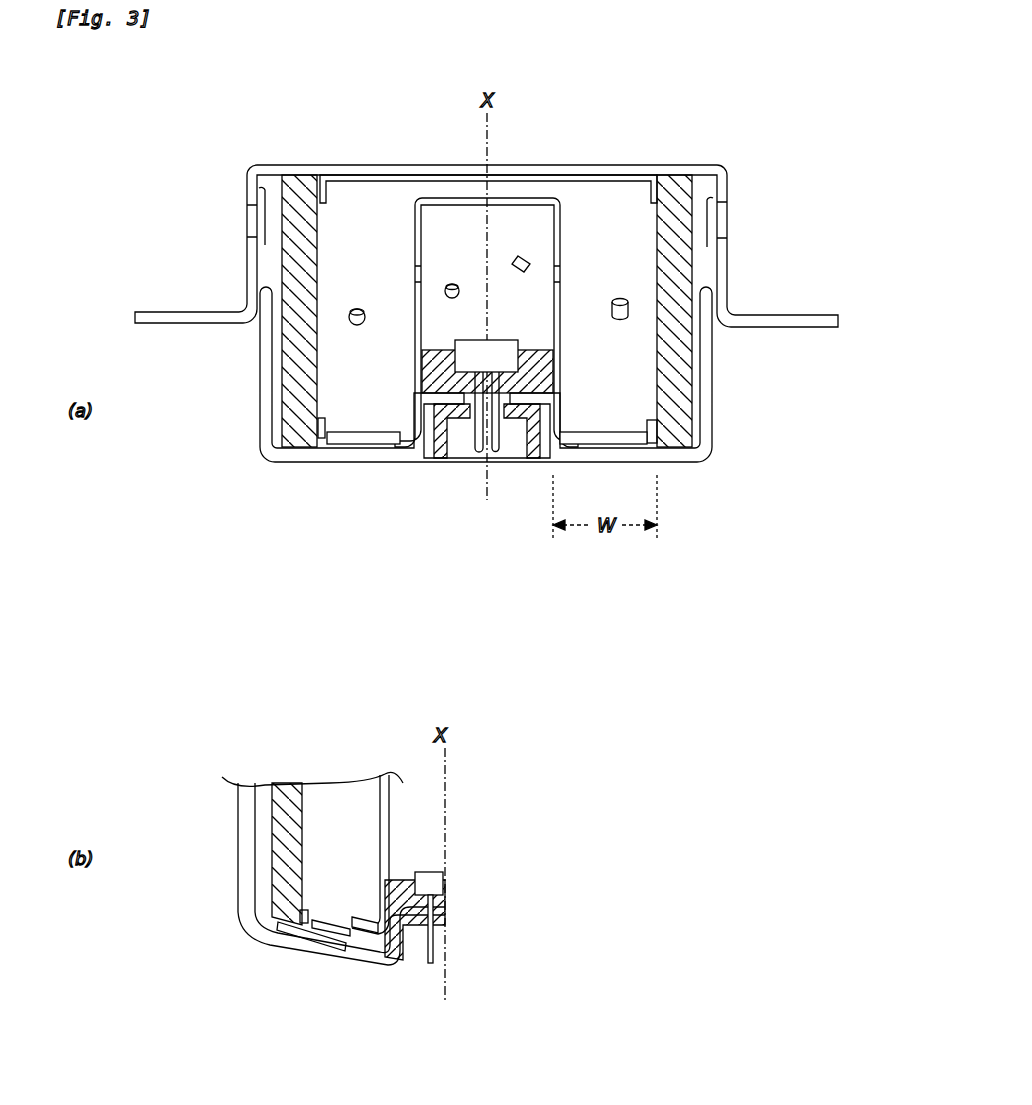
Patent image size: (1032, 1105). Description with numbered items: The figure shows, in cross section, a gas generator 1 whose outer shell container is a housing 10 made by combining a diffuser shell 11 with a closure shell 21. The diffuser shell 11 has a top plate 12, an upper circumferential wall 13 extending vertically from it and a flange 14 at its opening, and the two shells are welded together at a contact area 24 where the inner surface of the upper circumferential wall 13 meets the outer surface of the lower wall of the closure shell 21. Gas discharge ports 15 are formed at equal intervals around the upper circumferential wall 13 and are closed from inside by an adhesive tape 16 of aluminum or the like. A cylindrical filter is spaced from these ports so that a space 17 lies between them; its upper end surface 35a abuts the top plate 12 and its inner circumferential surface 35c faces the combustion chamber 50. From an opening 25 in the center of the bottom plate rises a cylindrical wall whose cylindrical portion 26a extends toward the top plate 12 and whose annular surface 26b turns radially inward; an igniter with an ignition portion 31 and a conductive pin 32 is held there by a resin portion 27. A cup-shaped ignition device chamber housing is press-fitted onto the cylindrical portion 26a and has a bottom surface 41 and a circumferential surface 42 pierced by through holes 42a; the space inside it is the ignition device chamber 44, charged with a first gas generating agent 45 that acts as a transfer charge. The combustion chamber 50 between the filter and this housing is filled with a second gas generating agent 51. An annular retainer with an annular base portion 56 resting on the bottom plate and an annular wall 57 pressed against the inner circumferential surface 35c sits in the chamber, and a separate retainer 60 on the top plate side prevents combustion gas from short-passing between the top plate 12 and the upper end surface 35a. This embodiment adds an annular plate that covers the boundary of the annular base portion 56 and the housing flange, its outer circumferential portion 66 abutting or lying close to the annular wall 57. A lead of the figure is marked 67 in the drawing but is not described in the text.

The gas generator 1 is at (500, 163).
The housing 10 is at (883, 295).
The diffuser shell 11 is at (728, 283).
The top plate 12 is at (357, 166).
The upper circumferential wall 13 is at (247, 272).
The flange 14 is at (150, 311).
The gas discharge ports 15 is at (247, 218).
The adhesive tape 16 is at (262, 188).
The space 17 is at (717, 258).
The closure shell 21 is at (715, 356).
The contact area 24 is at (258, 296).
The opening 25 is at (512, 420).
The cylindrical portion 26a is at (440, 430).
The annular surface 26b is at (465, 440).
The resin portion 27 is at (422, 362).
The ignition portion 31 is at (505, 343).
The conductive pin 32 is at (488, 460).
The upper end surface 35a is at (678, 177).
The inner circumferential surface 35c is at (318, 378).
The bottom surface 41 is at (520, 200).
The circumferential surface 42 is at (560, 310).
The through holes 42a is at (560, 272).
The ignition device chamber 44 is at (466, 238).
The first gas generating agent 45 is at (452, 284).
The combustion chamber 50 is at (381, 275).
The second gas generating agent 51 is at (622, 299).
The annular base portion 56 is at (335, 450).
The annular wall 57 is at (320, 443).
The retainer 60 is at (578, 181).
The outer circumferential portion 66 is at (318, 430).
The bottom portion 67 is at (400, 445).